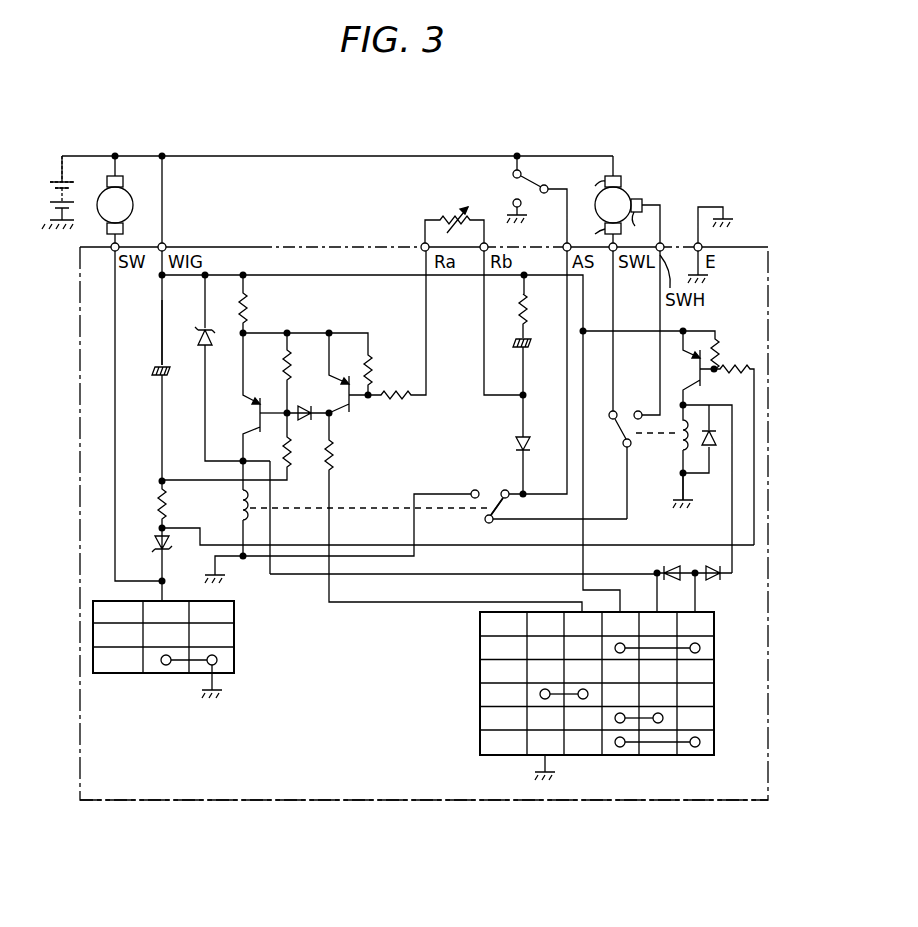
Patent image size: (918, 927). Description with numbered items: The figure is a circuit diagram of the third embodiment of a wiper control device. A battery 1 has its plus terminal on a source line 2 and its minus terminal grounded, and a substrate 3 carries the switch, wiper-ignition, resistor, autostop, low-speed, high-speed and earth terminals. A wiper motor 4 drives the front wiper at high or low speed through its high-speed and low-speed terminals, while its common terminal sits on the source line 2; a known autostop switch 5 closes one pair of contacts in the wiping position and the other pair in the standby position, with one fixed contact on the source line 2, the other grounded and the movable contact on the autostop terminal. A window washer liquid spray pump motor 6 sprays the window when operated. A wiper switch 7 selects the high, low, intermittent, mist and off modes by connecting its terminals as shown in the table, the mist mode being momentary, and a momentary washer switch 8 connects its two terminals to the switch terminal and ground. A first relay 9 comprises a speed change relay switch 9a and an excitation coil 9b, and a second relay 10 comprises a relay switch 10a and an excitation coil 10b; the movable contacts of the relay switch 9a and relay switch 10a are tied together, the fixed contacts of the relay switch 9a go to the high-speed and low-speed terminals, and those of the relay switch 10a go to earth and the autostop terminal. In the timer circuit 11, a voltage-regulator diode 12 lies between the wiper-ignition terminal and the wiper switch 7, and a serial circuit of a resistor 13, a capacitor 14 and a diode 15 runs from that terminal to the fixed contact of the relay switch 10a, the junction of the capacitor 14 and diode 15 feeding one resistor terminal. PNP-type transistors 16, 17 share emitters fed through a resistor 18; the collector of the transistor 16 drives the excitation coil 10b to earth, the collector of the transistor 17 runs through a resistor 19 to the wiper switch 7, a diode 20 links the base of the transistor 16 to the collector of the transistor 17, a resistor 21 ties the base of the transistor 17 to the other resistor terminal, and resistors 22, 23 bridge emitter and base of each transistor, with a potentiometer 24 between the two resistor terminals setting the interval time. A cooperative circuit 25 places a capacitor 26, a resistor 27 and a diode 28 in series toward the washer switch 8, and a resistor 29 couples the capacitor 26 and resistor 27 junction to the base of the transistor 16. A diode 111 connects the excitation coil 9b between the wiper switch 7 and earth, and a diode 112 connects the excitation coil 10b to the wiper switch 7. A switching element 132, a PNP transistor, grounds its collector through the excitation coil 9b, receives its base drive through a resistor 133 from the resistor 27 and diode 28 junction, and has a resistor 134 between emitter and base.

The battery 1 is at (52, 192).
The source line 2 is at (228, 156).
The substrate 3 is at (640, 802).
The wiper motor 4 is at (628, 192).
The autostop switch 5 is at (512, 186).
The window washer liquid spray pump motor 6 is at (128, 192).
The wiper switch 7 is at (480, 697).
The washer switch 8 is at (235, 636).
The first relay 9 is at (654, 442).
The speed change relay switch 9a is at (626, 400).
The excitation coil 9b is at (680, 472).
The second relay 10 is at (450, 512).
The relay switch 10a is at (490, 484).
The excitation coil 10b is at (238, 505).
The timer circuit 11 is at (316, 268).
The voltage-regulator diode 12 is at (200, 340).
The resistor 13 is at (527, 312).
The capacitor 14 is at (532, 347).
The diode 15 is at (528, 447).
The PNP-type transistor 16 is at (250, 413).
The PNP-type transistor 17 is at (357, 408).
The resistor 18 is at (247, 310).
The resistor 19 is at (333, 470).
The diode 20 is at (298, 409).
The resistor 21 is at (395, 405).
The resistor 22 is at (284, 368).
The resistor 23 is at (372, 372).
The potentiometer 24 is at (455, 216).
The cooperative circuit 25 is at (161, 358).
The capacitor 26 is at (158, 378).
The resistor 27 is at (158, 505).
The diode 28 is at (168, 542).
The resistor 29 is at (290, 462).
The diode 111 is at (716, 582).
The diode 112 is at (656, 566).
The switching element 132 is at (704, 375).
The resistor 133 is at (736, 368).
The resistor 134 is at (726, 338).